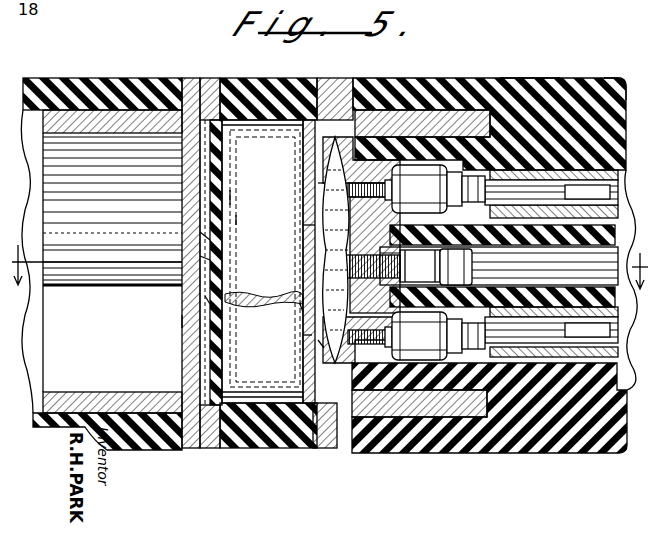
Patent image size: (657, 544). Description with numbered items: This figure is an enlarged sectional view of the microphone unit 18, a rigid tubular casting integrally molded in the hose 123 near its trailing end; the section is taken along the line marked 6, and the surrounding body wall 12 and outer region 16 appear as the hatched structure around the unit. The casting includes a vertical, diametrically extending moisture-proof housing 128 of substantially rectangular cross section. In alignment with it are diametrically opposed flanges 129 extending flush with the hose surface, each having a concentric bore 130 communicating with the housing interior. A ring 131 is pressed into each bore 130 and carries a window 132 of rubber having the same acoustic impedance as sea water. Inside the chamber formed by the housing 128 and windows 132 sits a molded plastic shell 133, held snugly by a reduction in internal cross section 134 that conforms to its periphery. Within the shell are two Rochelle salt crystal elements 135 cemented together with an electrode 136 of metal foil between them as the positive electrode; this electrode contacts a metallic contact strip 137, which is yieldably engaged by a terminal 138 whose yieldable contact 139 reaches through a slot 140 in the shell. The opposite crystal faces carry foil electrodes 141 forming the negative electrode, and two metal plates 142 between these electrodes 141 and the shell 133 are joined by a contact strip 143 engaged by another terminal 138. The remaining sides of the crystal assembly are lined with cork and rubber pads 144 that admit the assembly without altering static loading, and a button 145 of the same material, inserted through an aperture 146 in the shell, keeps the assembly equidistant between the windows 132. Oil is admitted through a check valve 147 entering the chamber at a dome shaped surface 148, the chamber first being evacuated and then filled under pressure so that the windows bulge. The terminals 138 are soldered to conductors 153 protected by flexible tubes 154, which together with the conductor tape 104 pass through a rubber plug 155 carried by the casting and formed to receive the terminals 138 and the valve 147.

The section line 6- 6 is at (324, 279).
The housing body 12 is at (568, 73).
The housing wall 16 is at (533, 80).
The microphone unit 18 is at (176, 326).
The conductor tape 104 is at (330, 211).
The hose 123 is at (447, 100).
The moisture-proof housing 128 is at (200, 341).
The flange 129 is at (191, 80).
The bore 130 is at (206, 95).
The ring 131 is at (331, 82).
The window 132 is at (283, 86).
The shell 133 is at (210, 300).
The reduction in internal cross section 134 is at (206, 132).
The piezo-electric crystal element 135 is at (303, 308).
The electrode 136 is at (322, 346).
The contact strip 137 is at (307, 338).
The terminal 138 is at (416, 262).
The yieldable contact 139 is at (320, 248).
The slot 140 is at (320, 150).
The metal foil electrode 141 is at (256, 217).
The plate 142 is at (236, 197).
The contact strip 143 is at (322, 190).
The pad 144 is at (310, 228).
The button 145 is at (206, 259).
The aperture 146 is at (206, 238).
The check valve 147 is at (472, 266).
The dome shaped surface 148 is at (308, 281).
The conductor 153 is at (620, 188).
The flexible tube 154 is at (612, 196).
The rubber plug 155 is at (604, 82).